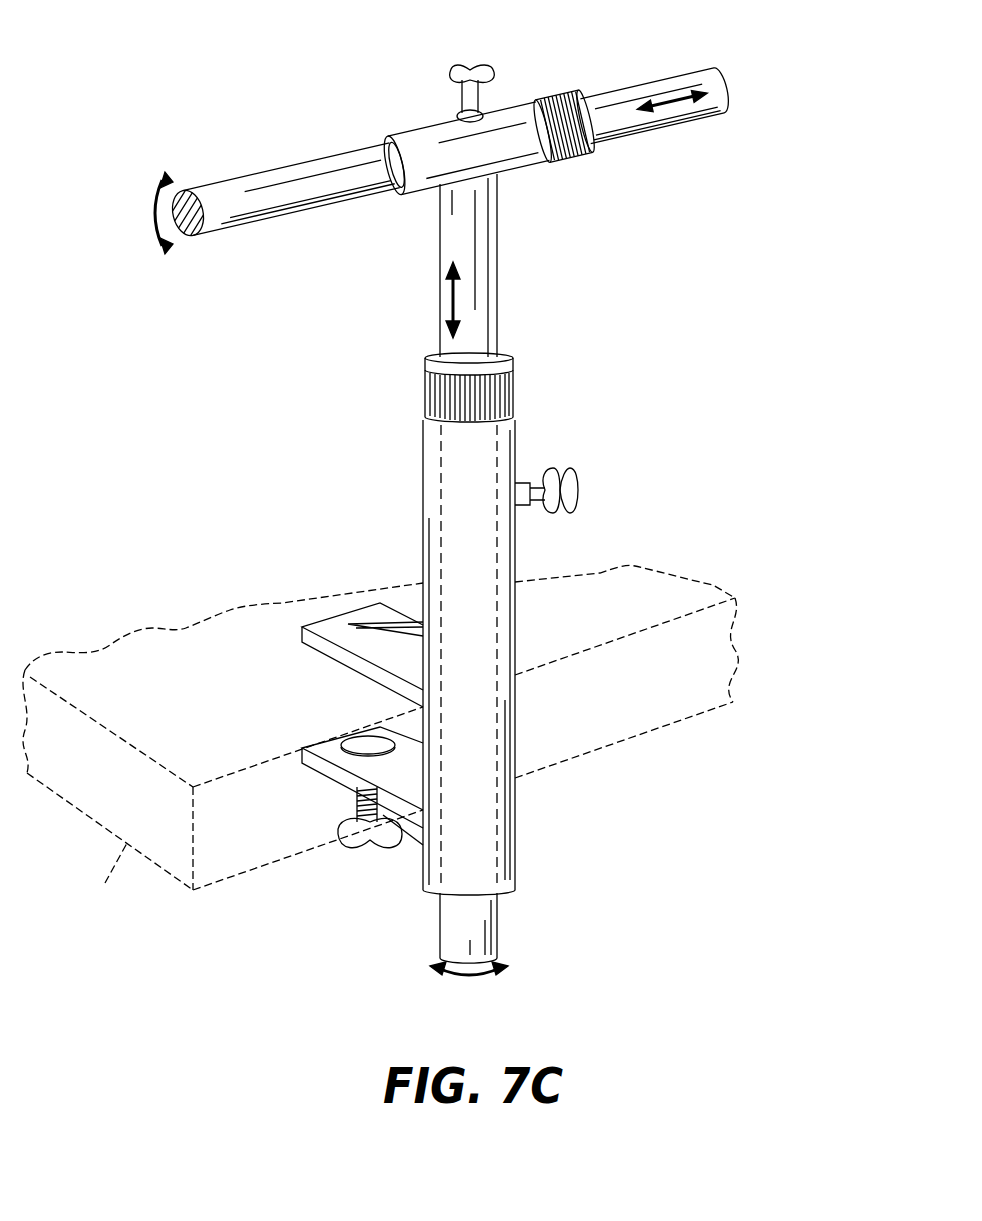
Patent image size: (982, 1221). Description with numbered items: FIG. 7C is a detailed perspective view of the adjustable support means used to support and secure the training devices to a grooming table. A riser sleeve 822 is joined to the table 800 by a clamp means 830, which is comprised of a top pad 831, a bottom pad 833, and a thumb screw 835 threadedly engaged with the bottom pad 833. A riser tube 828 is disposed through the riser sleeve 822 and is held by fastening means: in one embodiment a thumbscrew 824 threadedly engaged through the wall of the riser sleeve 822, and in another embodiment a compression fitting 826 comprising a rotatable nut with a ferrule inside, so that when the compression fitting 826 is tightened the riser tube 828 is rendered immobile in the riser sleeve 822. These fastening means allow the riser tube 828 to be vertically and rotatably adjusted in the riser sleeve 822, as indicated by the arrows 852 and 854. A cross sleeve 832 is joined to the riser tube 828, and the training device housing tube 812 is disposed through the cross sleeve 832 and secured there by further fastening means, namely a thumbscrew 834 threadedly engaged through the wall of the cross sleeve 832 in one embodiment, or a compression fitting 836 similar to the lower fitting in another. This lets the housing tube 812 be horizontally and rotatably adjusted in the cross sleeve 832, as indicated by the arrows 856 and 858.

The table 800 is at (380, 742).
The training device housing tube 812 is at (278, 170).
The riser sleeve 822 is at (425, 460).
The thumbscrew 824 is at (580, 490).
The compression fitting 826 is at (427, 385).
The riser tube 828 is at (500, 297).
The clamp means 830 is at (308, 722).
The top pad 831 is at (340, 617).
The cross sleeve 832 is at (420, 125).
The bottom pad 833 is at (322, 767).
The thumbscrew 834 is at (470, 66).
The thumb screw 835 is at (353, 856).
The compression fitting 836 is at (552, 98).
The arrow 852 is at (450, 302).
The arrow 854 is at (468, 975).
The arrow 856 is at (678, 95).
The arrow 858 is at (157, 205).